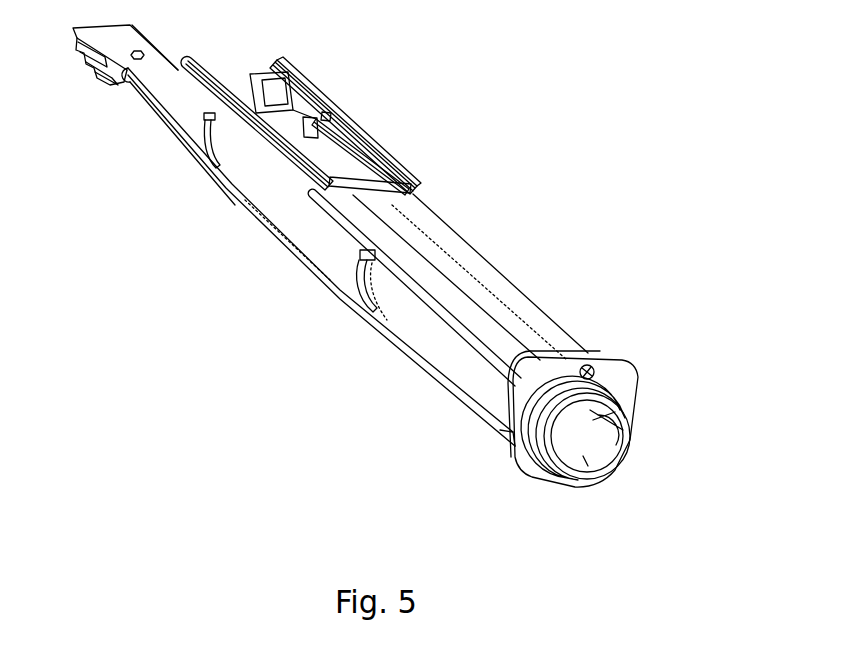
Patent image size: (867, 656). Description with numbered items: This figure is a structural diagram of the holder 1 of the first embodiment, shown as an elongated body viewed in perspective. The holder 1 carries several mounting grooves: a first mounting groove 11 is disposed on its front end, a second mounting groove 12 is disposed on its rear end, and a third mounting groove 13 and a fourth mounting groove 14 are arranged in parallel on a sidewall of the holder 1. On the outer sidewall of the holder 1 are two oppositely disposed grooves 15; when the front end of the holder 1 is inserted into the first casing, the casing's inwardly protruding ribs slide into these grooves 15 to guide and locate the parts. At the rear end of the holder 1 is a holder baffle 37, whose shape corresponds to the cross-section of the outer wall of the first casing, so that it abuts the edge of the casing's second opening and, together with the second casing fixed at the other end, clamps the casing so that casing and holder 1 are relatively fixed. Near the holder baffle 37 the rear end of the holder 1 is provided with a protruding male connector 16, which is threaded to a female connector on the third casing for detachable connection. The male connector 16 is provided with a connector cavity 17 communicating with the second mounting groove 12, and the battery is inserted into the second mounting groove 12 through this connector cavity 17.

The holder 1 is at (287, 232).
The first mounting groove 11 is at (177, 90).
The second mounting groove 12 is at (620, 450).
The third mounting groove 13 is at (287, 68).
The fourth mounting groove 14 is at (330, 137).
The groove 15 is at (360, 260).
The male connector 16 is at (527, 463).
The connector cavity 17 is at (598, 478).
The holder baffle 37 is at (490, 430).